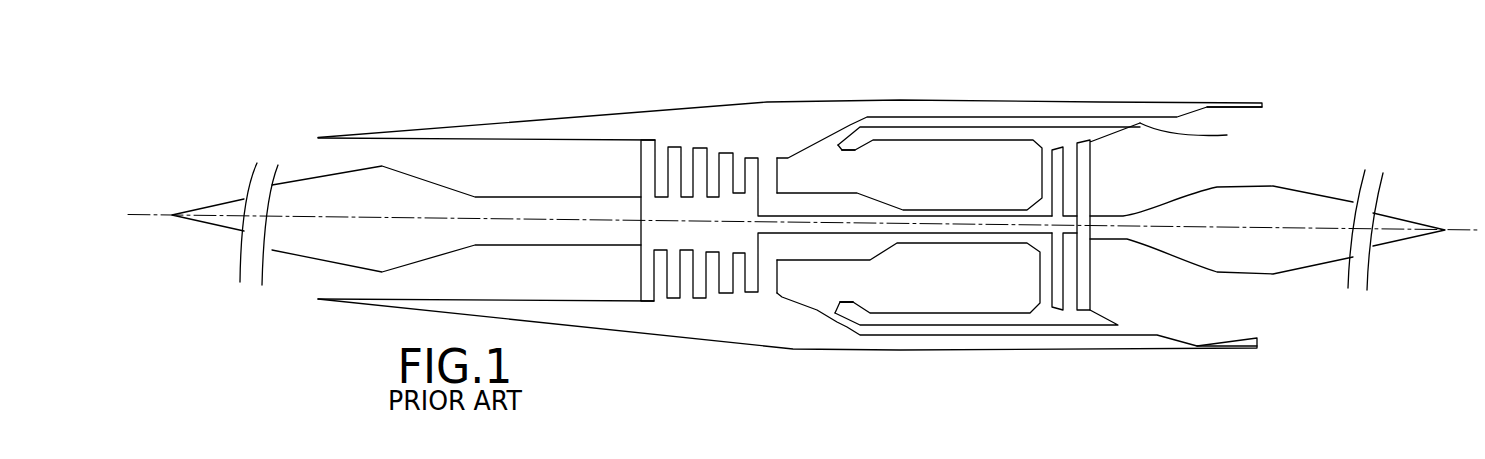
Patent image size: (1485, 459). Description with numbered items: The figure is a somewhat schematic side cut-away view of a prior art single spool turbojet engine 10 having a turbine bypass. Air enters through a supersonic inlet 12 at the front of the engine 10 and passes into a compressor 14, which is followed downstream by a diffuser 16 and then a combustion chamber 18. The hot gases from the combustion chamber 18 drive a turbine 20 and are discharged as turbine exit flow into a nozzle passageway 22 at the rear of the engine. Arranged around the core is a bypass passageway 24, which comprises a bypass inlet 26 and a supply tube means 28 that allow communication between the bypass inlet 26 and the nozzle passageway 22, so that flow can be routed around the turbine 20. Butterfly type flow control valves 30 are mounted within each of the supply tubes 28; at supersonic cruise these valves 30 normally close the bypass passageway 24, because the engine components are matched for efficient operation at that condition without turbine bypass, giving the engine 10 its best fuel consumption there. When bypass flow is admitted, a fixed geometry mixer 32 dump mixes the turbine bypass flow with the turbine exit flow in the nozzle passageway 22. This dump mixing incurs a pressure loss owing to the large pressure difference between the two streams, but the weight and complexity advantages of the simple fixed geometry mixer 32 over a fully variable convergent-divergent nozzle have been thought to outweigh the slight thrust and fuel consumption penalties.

The single spool turbojet engine 10 is at (458, 100).
The supersonic inlet 12 is at (310, 151).
The compressor 14 is at (706, 128).
The diffuser 16 is at (794, 153).
The combustion chamber 18 is at (957, 155).
The turbine 20 is at (1054, 129).
The nozzle passageway 22 is at (1172, 172).
The bypass passageway 24 is at (978, 105).
The bypass inlet 26 is at (845, 169).
The supply tube means 28 is at (877, 119).
The butterfly type flow control valve 30 is at (833, 118).
The fixed geometry mixer 32 is at (1227, 136).